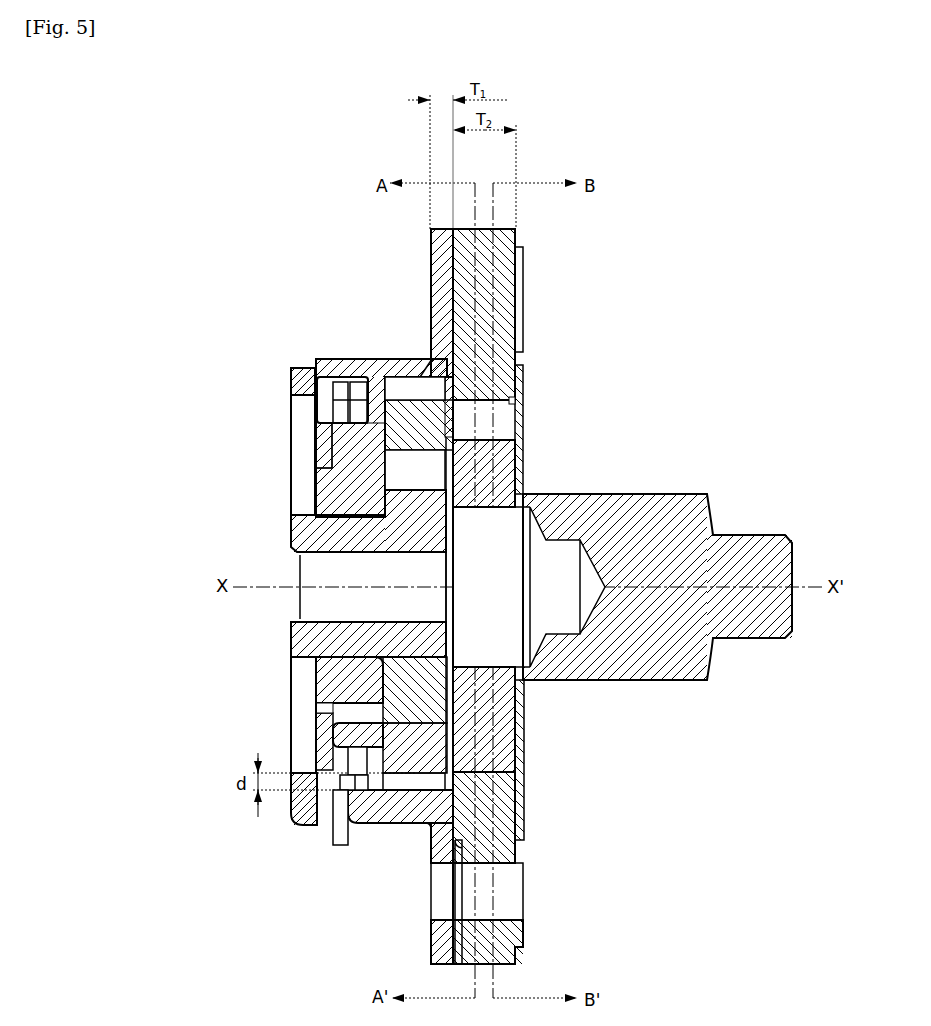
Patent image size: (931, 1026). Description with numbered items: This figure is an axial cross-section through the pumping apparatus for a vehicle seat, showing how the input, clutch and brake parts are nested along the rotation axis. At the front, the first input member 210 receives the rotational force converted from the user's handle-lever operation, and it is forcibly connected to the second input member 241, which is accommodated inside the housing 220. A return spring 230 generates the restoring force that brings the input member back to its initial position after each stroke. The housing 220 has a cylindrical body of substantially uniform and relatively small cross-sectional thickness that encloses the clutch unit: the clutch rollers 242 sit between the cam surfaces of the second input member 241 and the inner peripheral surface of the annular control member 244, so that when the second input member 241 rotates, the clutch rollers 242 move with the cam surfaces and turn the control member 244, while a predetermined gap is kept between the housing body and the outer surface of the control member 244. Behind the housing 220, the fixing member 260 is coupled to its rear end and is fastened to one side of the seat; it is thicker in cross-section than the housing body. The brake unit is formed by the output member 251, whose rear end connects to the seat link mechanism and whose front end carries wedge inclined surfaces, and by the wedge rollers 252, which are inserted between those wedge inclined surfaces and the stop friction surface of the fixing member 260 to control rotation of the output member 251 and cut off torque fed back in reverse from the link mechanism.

The first input member 210 is at (290, 385).
The housing 220 is at (370, 358).
The return spring 230 is at (342, 830).
The second input member 241 is at (291, 535).
The clutch rollers 242 is at (400, 468).
The control member 244 is at (403, 358).
The output member 251 is at (595, 494).
The wedge rollers 252 is at (525, 423).
The fixing member 260 is at (510, 977).